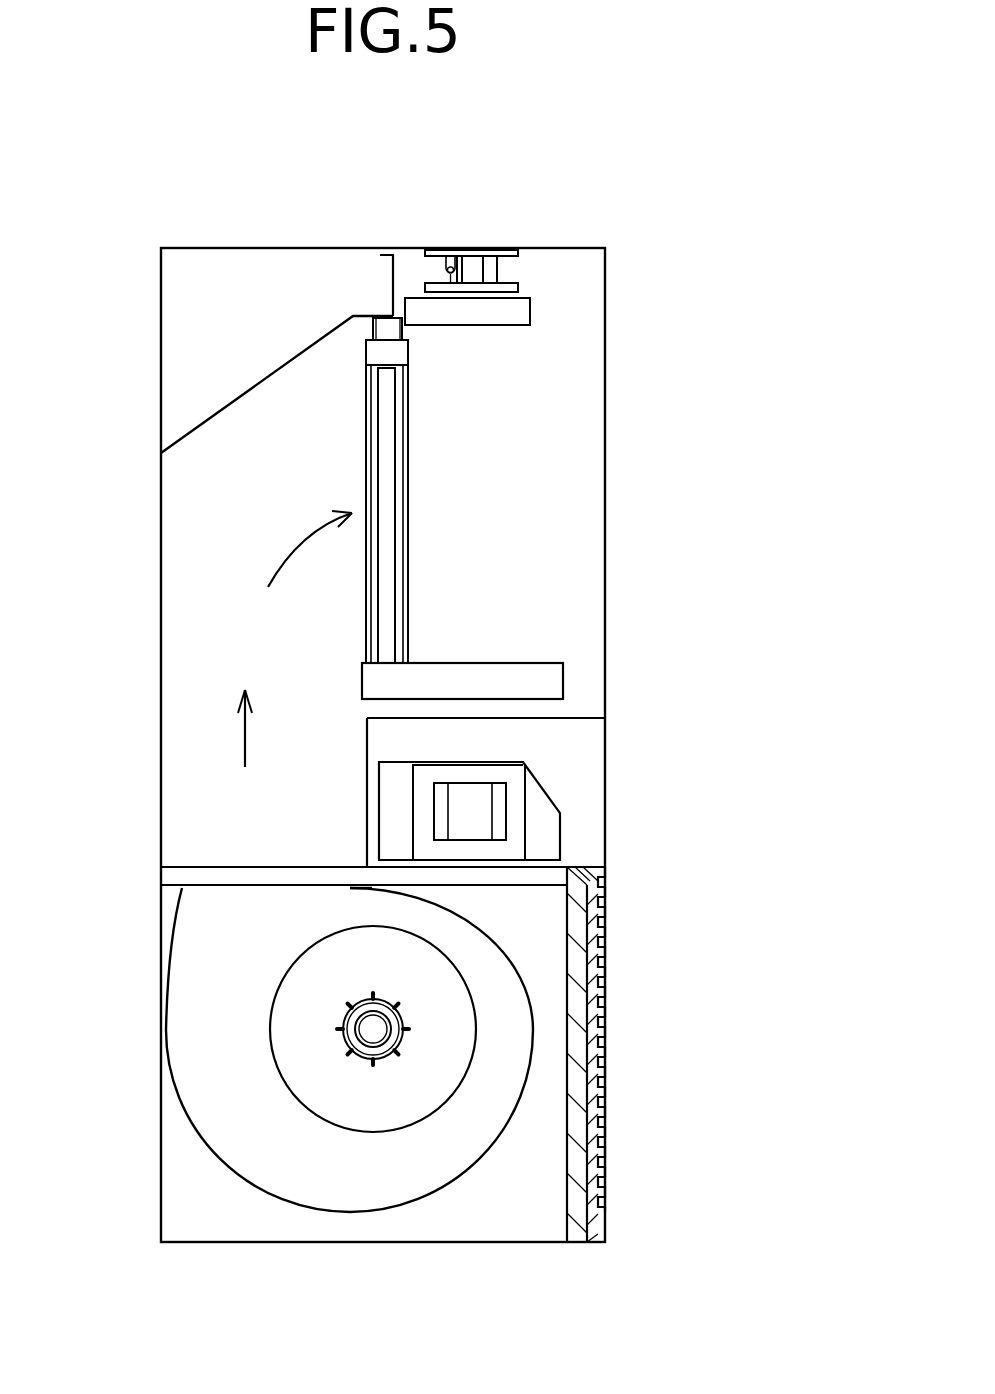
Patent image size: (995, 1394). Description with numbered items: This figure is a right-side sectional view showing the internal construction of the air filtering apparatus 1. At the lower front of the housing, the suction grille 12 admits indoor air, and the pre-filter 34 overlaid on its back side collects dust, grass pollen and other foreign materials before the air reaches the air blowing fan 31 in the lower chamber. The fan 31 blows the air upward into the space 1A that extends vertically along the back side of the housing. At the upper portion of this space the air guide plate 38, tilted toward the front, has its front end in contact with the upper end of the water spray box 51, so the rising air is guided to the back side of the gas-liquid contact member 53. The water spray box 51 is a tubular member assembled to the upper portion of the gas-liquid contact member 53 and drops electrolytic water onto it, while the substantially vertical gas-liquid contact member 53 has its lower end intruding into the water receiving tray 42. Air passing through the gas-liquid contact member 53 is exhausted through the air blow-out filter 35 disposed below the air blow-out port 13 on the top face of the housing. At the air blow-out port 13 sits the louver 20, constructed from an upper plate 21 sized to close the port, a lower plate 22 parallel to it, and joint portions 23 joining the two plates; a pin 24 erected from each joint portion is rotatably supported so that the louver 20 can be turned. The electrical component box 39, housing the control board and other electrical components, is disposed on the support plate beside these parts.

The air filtering apparatus 1 is at (717, 180).
The space 1A is at (187, 669).
The suction grille 12 is at (620, 1152).
The air blow-out port 13 is at (437, 238).
The louver 20 is at (520, 272).
The upper plate 21 is at (508, 255).
The lower plate 22 is at (518, 287).
The joint portions 23 is at (483, 255).
The pin 24 is at (450, 255).
The air blowing fan 31 is at (370, 1177).
The pre-filter 34 is at (577, 1188).
The air blow-out filter 35 is at (527, 315).
The air guide plate 38 is at (198, 425).
The electrical component box 39 is at (555, 802).
The water receiving tray 42 is at (553, 683).
The water spray box 51 is at (397, 330).
The gas-liquid contact member 53 is at (400, 437).